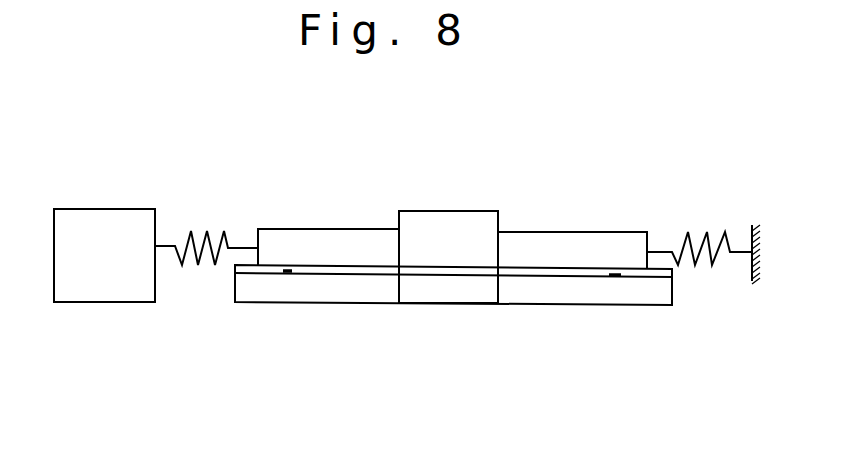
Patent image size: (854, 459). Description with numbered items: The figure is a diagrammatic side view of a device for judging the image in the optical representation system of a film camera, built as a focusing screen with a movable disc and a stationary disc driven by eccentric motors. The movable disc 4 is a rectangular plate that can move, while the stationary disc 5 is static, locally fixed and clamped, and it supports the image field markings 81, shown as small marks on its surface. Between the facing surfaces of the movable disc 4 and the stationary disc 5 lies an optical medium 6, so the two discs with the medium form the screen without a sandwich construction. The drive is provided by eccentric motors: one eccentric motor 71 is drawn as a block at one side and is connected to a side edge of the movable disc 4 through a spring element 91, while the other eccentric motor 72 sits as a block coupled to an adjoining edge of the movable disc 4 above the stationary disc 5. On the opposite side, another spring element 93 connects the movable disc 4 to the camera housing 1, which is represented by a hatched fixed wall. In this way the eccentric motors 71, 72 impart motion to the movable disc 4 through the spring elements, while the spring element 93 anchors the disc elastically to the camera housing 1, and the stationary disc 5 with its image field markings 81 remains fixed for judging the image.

The eccentric motor 71 is at (108, 228).
The spring element 91 is at (205, 236).
The movable disc 4 is at (338, 247).
The eccentric motor 72 is at (447, 277).
The optical medium 6 is at (549, 270).
The spring element 93 is at (705, 237).
The camera housing 1 is at (760, 271).
The stationary disc 5 is at (550, 296).
The image field markings 81 is at (287, 274).